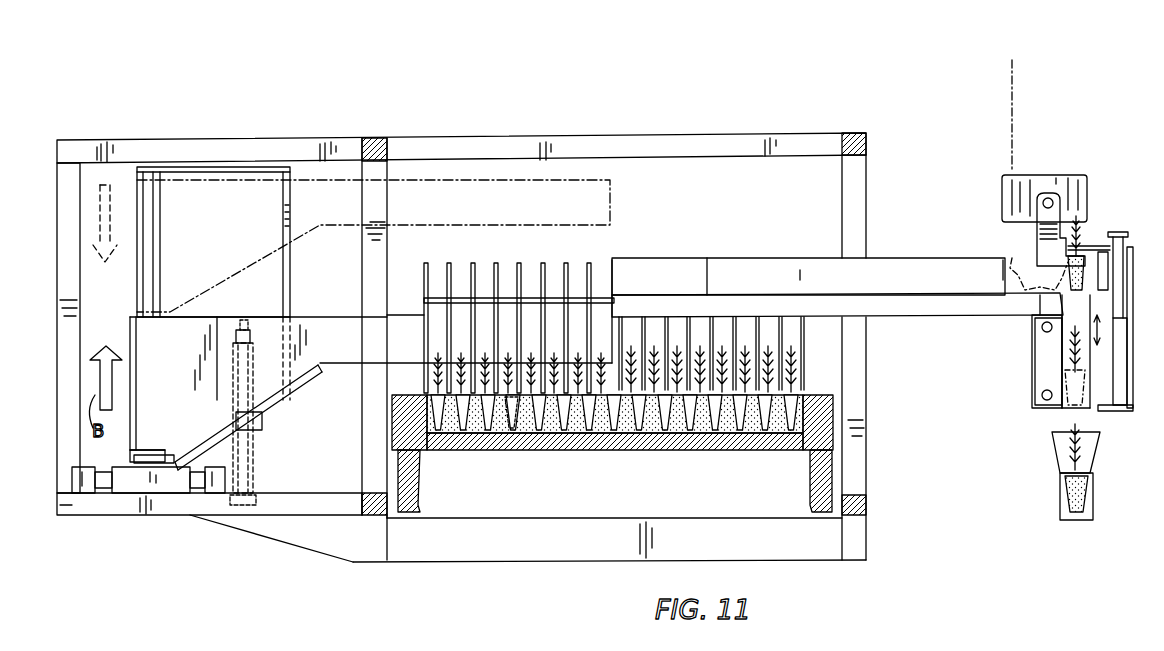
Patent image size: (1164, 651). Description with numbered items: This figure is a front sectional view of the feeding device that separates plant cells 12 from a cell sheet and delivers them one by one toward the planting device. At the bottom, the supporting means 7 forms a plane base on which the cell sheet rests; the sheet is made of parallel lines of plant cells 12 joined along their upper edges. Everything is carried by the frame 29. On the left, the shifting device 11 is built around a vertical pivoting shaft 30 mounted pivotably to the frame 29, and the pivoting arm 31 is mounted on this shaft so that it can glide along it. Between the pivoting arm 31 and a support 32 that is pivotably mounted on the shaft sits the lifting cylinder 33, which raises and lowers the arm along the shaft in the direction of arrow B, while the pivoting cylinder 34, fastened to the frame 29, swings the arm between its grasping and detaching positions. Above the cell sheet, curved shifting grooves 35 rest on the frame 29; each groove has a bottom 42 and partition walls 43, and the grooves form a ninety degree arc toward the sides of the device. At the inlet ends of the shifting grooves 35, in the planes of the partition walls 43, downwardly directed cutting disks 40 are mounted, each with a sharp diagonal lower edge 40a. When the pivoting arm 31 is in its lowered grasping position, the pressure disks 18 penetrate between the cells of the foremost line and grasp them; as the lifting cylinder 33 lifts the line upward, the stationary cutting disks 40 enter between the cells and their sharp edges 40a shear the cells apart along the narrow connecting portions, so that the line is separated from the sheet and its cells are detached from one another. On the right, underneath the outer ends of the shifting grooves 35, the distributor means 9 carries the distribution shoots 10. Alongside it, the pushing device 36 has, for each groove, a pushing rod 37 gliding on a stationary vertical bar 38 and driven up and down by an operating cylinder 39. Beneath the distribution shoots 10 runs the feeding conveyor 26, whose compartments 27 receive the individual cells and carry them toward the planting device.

The supporting means 7 is at (552, 458).
The distributor means 9 is at (1028, 350).
The distribution shoots 10 is at (1060, 366).
The shifting device 11 is at (122, 337).
The plant cells 12 is at (528, 420).
The pressure disks 18 is at (1040, 228).
The feeding conveyor 26 is at (1052, 452).
The compartments 27 is at (1060, 490).
The frame 29 is at (258, 150).
The vertical pivoting shaft 30 is at (152, 253).
The pivoting arm 31 is at (348, 355).
The support 32 is at (282, 395).
The lifting cylinder 33 is at (253, 447).
The pivoting cylinder 34 is at (104, 487).
The shifting grooves 35 is at (505, 275).
The pushing device 36 is at (1118, 225).
The pushing rod 37 is at (1082, 252).
The stationary vertical bar 38 is at (1062, 310).
The operating cylinder 39 is at (1117, 412).
The cutting disks 40 is at (472, 352).
The diagonal lower edge 40a is at (513, 397).
The bottom 42 is at (458, 298).
The partition walls 43 is at (447, 280).